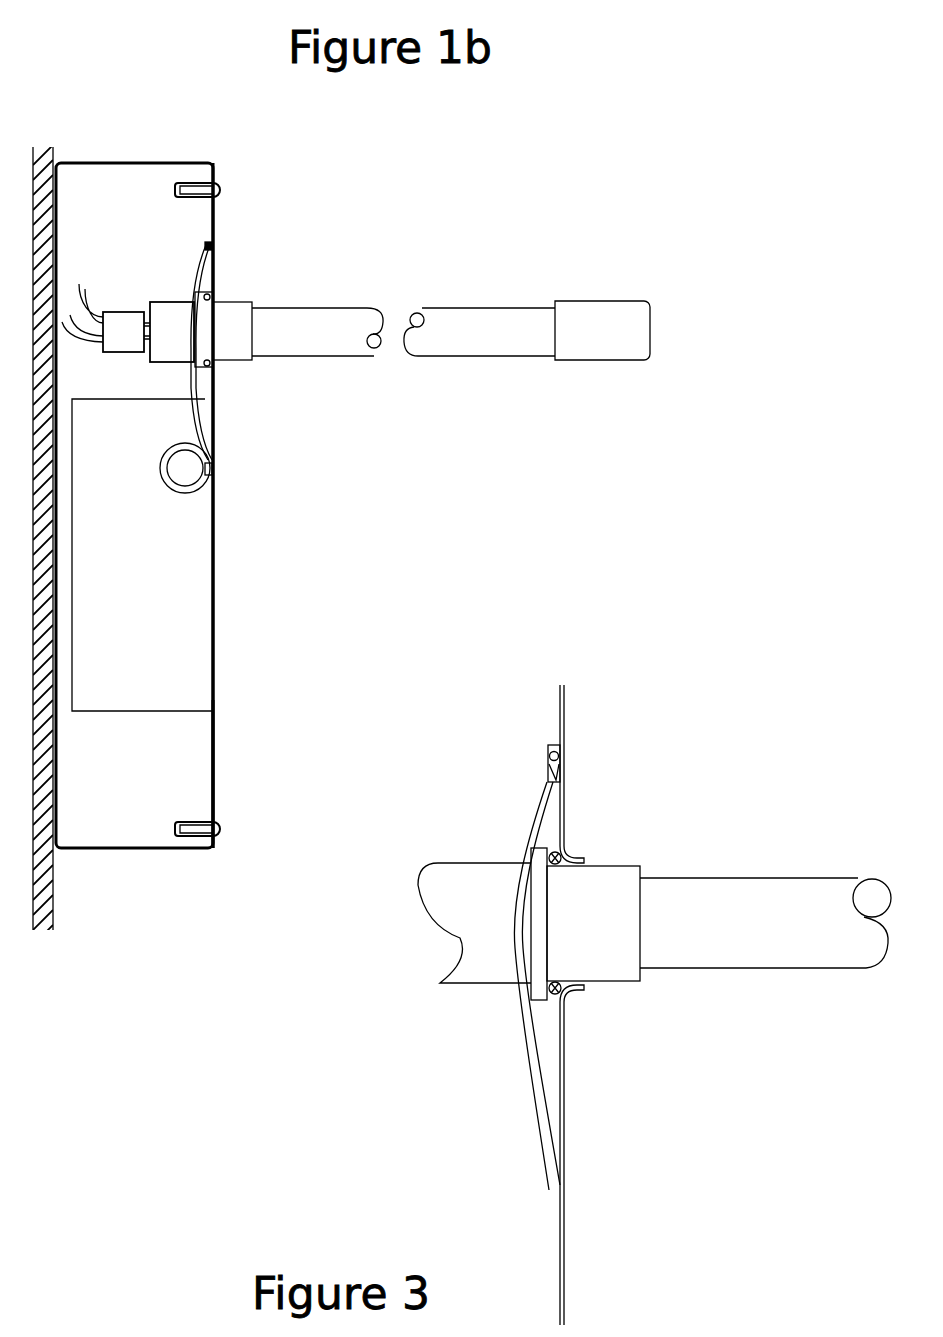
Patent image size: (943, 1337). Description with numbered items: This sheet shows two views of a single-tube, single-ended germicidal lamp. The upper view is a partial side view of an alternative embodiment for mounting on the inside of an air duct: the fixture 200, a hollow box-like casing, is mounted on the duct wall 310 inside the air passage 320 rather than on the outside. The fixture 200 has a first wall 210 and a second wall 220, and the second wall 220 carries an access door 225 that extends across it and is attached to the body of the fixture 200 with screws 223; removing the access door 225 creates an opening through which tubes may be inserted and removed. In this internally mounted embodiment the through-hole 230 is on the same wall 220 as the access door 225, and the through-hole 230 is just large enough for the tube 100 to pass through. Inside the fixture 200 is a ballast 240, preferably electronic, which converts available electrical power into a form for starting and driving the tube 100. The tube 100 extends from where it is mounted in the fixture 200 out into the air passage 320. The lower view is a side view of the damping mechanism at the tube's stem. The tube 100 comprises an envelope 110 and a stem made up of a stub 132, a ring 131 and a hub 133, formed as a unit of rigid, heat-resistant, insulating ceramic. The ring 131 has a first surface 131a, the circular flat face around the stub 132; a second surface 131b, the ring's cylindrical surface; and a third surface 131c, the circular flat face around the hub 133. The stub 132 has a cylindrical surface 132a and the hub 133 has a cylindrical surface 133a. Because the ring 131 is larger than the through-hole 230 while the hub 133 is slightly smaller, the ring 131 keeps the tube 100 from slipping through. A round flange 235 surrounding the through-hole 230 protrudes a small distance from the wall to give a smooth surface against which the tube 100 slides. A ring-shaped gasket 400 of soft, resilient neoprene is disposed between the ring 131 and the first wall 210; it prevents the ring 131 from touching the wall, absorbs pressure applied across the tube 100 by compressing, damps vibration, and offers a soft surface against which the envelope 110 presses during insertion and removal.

In FIG. 1B, the tube 100 is at (455, 300).
In FIG. 3, the envelope 110 is at (722, 870).
In FIG. 3, the ring 131 is at (532, 845).
In FIG. 3, the first surface 131a is at (520, 937).
In FIG. 3, the second surface 131b is at (530, 997).
In FIG. 3, the third surface 131c is at (537, 914).
In FIG. 3, the stub 132 is at (490, 870).
In FIG. 3, the surface of stub 132a is at (462, 930).
In FIG. 3, the hub 133 is at (625, 955).
In FIG. 3, the surface of hub 133a is at (594, 959).
In FIG. 1B, the fixture 200 is at (185, 719).
In FIG. 3, the first wall 210 is at (555, 1112).
In FIG. 1B, the second wall 220 is at (210, 510).
In FIG. 1B, the screws 223 is at (213, 827).
In FIG. 1B, the access door 225 is at (210, 755).
In FIG. 1B, the through-hole 230 is at (209, 357).
In FIG. 3, the flange 235 is at (552, 848).
In FIG. 1B, the ballast 240 is at (165, 622).
In FIG. 1B, the wall 310 is at (48, 880).
In FIG. 1B, the air passage 320 is at (383, 583).
In FIG. 3, the gasket 400 is at (554, 985).